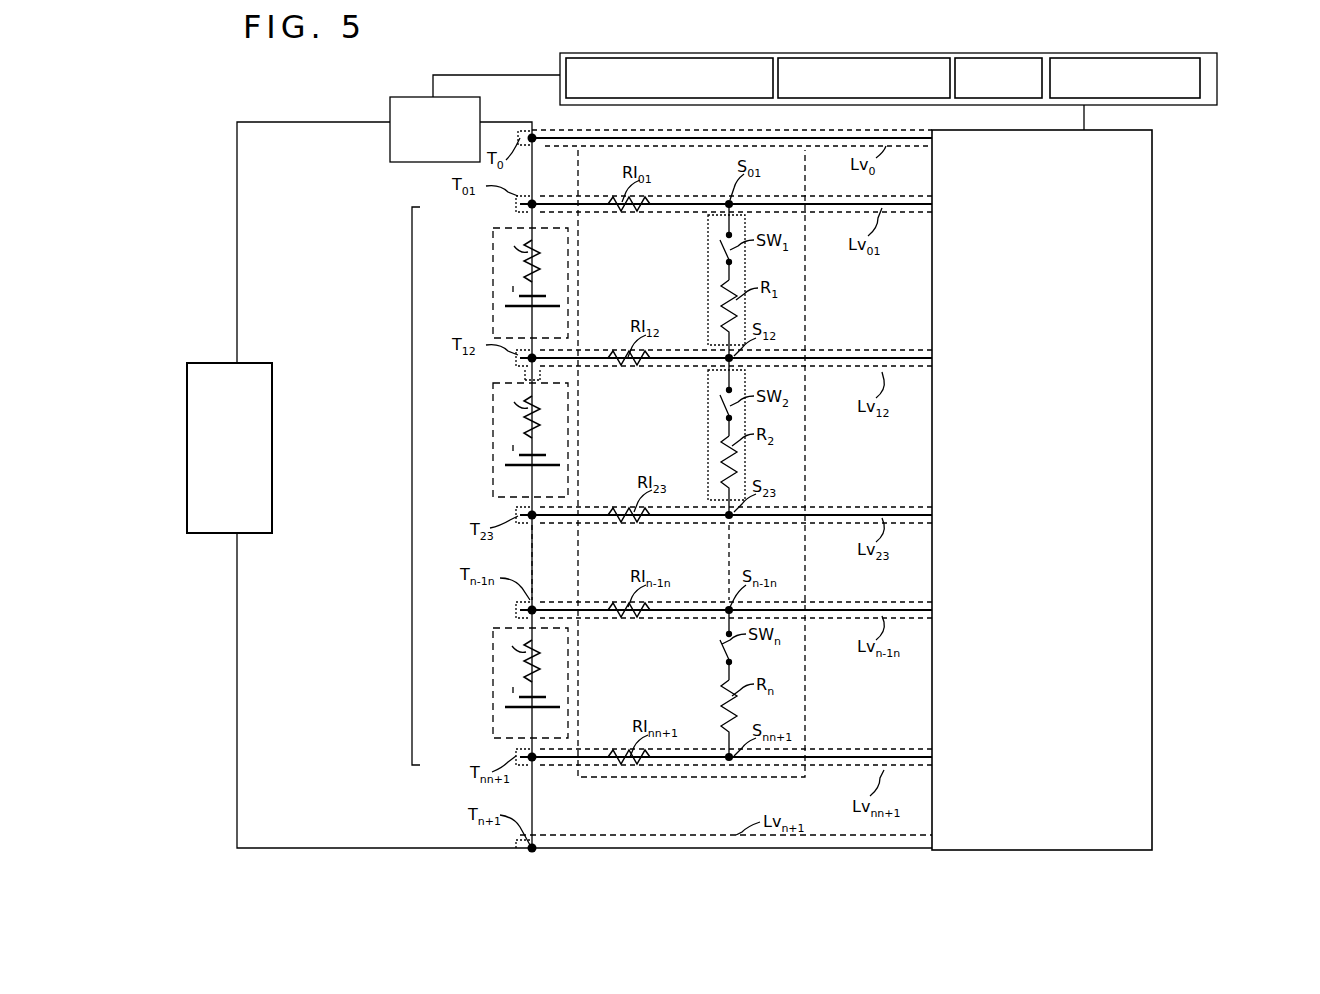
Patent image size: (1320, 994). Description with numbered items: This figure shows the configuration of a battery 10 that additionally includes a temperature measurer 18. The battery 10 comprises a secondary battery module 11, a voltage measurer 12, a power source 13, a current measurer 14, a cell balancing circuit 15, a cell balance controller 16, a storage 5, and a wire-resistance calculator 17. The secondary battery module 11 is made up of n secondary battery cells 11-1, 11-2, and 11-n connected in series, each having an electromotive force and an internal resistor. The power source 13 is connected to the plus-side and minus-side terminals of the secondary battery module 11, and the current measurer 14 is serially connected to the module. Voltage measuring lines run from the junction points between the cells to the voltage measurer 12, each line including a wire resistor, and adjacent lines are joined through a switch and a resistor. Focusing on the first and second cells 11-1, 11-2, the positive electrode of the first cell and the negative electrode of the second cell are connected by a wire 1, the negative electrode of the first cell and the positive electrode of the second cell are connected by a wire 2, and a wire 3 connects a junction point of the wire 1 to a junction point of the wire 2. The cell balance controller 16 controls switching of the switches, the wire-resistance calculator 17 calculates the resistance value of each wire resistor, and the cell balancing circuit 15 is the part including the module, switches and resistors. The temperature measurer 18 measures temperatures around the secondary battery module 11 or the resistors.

The battery 10 is at (214, 154).
The current measurer 14 is at (390, 105).
The cell balance controller 16 is at (560, 84).
The wire-resistance calculator 17 is at (828, 98).
The storage 5 is at (984, 98).
The temperature measurer 18 is at (1128, 98).
The voltage measurer 12 is at (1158, 144).
The power source 13 is at (272, 364).
The secondary battery module 11 is at (412, 487).
The secondary battery cell 11-1 is at (480, 268).
The secondary battery cell 11-2 is at (480, 440).
The secondary battery cell 11-n is at (480, 656).
The wire 1 is at (512, 376).
The wire 2 is at (708, 255).
The wire 3 is at (667, 382).
The cell balancing circuit 15 is at (700, 784).